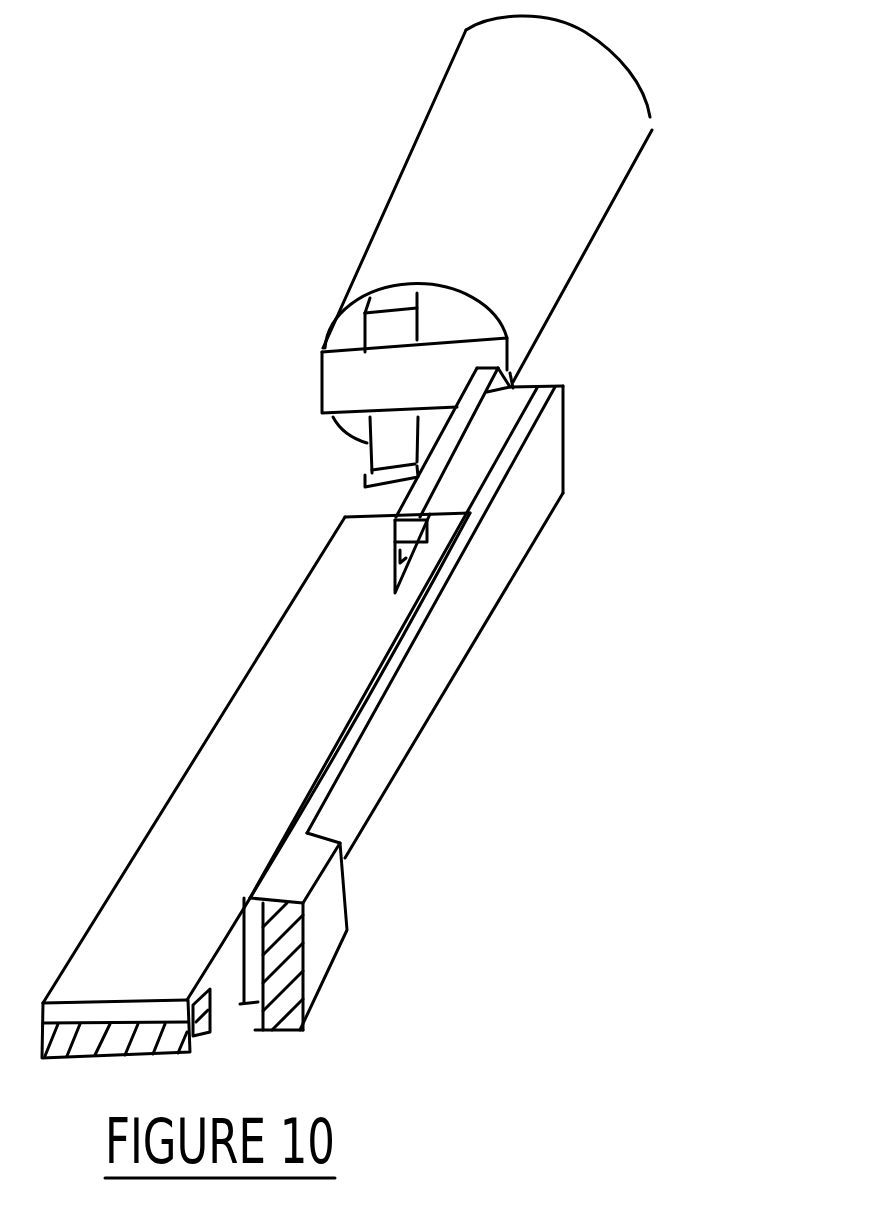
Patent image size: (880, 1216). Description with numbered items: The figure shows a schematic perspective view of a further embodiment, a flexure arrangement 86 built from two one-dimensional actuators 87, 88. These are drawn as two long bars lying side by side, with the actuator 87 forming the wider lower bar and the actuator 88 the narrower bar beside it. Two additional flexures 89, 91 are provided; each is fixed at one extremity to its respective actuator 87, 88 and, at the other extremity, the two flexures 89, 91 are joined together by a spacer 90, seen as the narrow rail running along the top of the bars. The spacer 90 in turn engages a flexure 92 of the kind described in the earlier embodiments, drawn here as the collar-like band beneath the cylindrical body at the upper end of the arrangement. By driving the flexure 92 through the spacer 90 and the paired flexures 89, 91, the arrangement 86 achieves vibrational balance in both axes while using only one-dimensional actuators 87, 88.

The flexure arrangement 86 is at (224, 326).
The one dimensional actuator 87 is at (163, 890).
The one dimensional actuator 88 is at (390, 738).
The flexure 89 is at (473, 480).
The spacer 90 is at (453, 433).
The flexure 91 is at (412, 563).
The flexure 92 is at (447, 373).